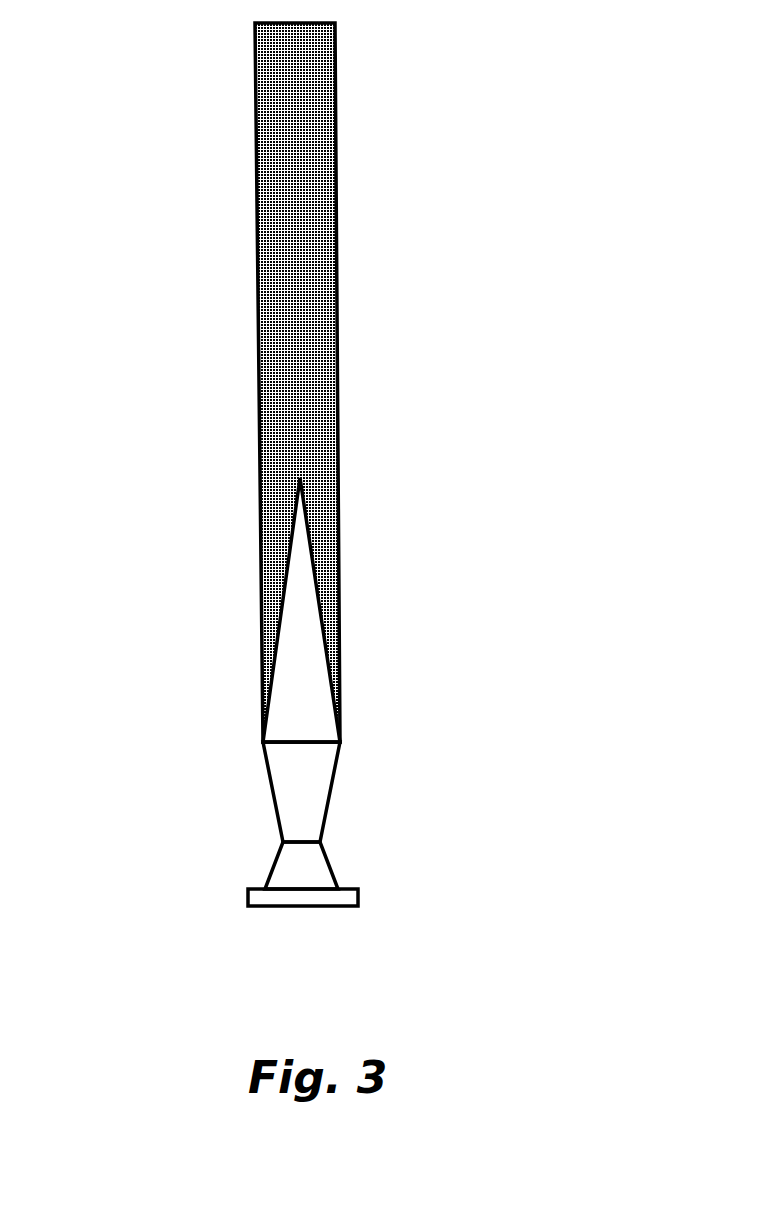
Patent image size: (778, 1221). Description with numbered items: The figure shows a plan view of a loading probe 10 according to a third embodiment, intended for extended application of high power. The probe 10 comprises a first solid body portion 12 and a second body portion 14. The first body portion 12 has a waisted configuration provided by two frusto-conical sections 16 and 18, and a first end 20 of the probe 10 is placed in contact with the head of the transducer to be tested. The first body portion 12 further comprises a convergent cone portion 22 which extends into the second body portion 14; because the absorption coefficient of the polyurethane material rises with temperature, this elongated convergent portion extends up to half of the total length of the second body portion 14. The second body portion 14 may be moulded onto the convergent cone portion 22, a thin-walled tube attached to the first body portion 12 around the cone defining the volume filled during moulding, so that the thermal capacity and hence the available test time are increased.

The loading probe 10 is at (303, 501).
The first solid body portion 12 is at (303, 791).
The second body portion 14 is at (252, 340).
The frusto-conical section 16 is at (320, 779).
The frusto-conical section 18 is at (315, 864).
The first end 20 is at (252, 903).
The convergent cone portion 22 is at (302, 643).